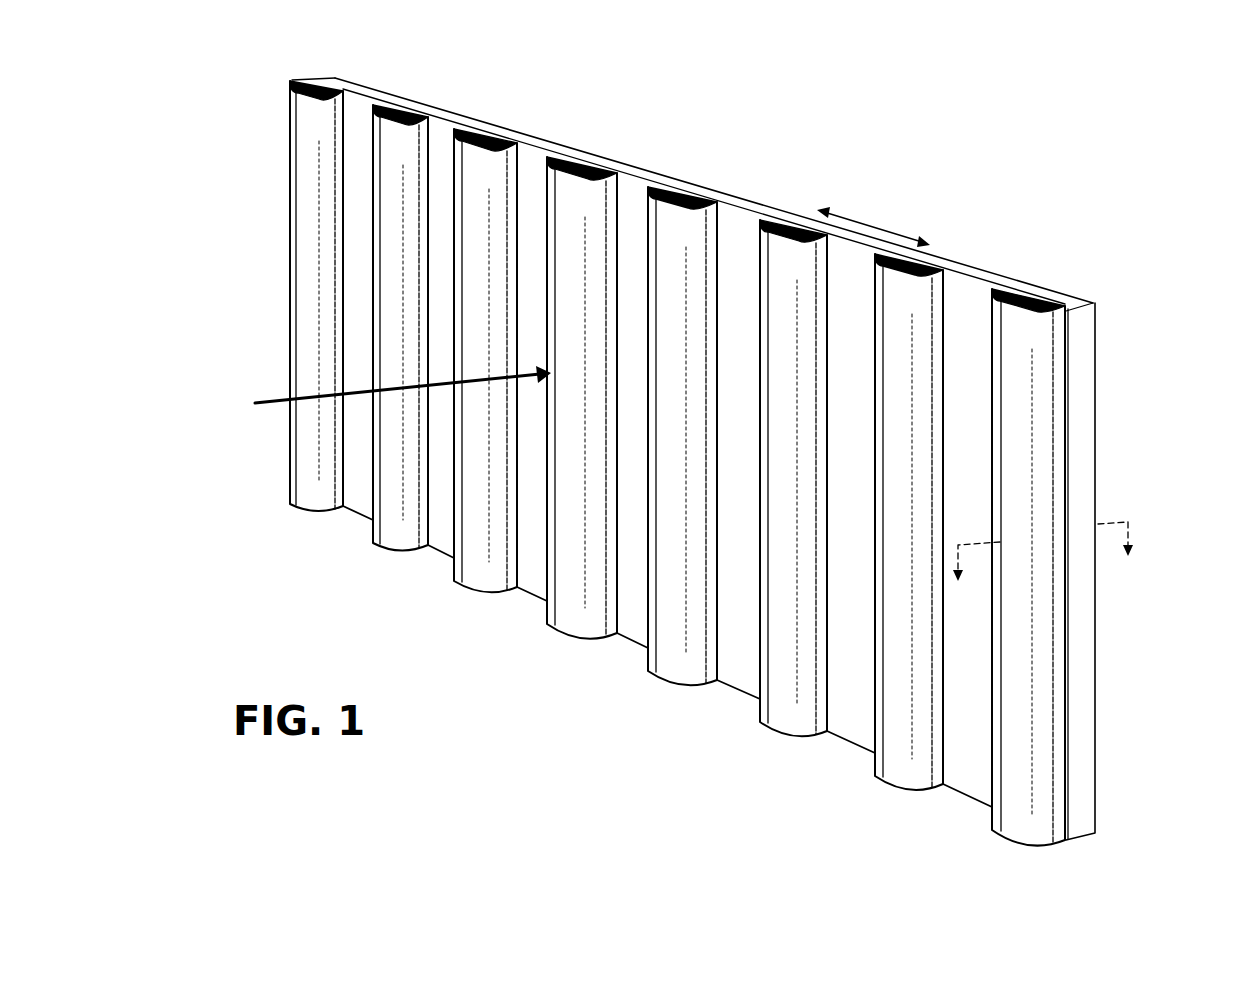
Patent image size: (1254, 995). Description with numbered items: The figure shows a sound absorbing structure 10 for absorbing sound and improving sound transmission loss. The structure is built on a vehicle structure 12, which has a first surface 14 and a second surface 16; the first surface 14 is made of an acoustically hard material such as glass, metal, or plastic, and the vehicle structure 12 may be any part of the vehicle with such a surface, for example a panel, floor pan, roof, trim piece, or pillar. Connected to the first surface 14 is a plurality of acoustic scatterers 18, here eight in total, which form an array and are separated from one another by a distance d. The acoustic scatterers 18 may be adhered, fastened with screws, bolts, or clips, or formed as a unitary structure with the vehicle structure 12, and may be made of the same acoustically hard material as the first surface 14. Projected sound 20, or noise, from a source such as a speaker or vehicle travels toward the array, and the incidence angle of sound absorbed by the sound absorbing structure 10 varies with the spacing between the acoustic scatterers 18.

The sound absorbing structure 10 is at (805, 158).
The vehicle structure 12 is at (1007, 275).
The first surface 14 is at (973, 310).
The second surface 16 is at (1082, 297).
The acoustic scatterers 18 is at (306, 197).
The projected sound 20 is at (267, 403).